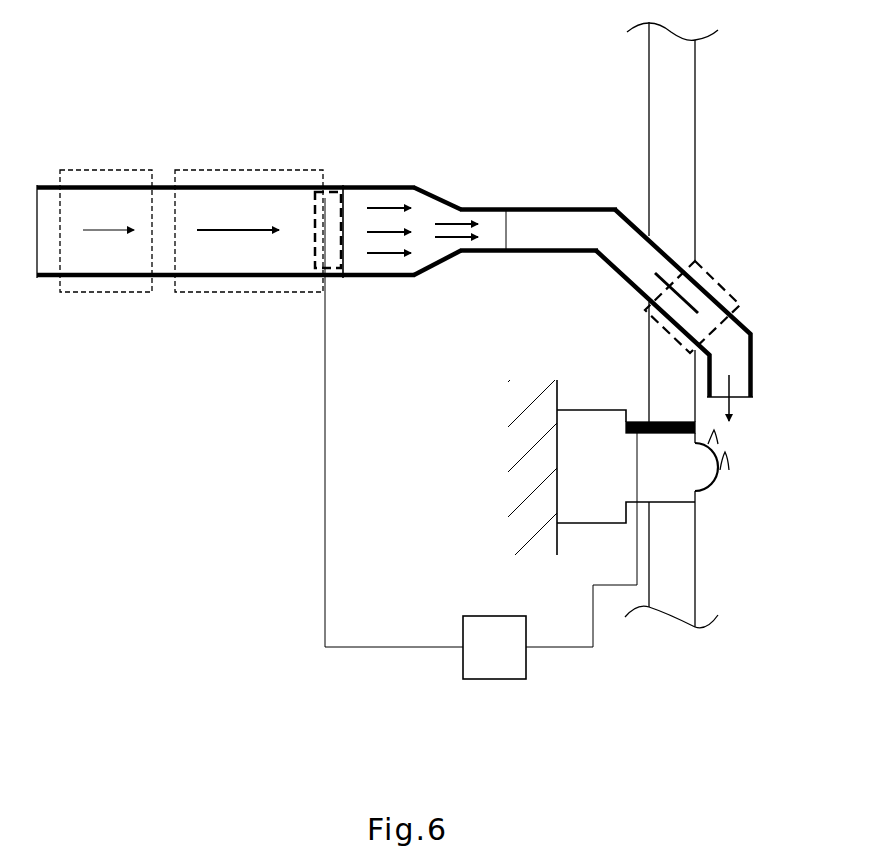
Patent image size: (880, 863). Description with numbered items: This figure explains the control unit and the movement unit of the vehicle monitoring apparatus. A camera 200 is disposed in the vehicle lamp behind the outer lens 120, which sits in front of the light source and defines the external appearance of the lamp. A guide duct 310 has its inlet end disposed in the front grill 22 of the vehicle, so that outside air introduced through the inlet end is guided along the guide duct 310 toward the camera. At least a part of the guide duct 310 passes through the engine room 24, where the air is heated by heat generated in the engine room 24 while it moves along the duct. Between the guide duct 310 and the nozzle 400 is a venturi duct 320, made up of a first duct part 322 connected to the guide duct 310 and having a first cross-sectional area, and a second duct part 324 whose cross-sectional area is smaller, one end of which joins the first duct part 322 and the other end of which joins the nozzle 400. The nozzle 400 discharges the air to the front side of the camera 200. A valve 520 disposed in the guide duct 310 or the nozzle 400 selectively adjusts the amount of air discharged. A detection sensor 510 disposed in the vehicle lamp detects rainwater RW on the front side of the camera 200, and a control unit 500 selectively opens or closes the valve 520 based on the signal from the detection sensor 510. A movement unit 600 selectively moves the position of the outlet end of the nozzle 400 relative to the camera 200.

The front grill 22 is at (107, 170).
The engine room 24 is at (250, 170).
The guide duct 310 is at (165, 185).
The venturi duct 320 is at (483, 123).
The first duct part 322 is at (376, 184).
The second duct part 324 is at (482, 205).
The valve 520 is at (325, 192).
The nozzle 400 is at (747, 321).
The outer lens 120 is at (688, 152).
The movement unit 600 is at (715, 278).
The camera 200 is at (588, 385).
The detection sensor 510 is at (657, 419).
The control unit 500 is at (490, 680).
The rainwater RW is at (735, 467).